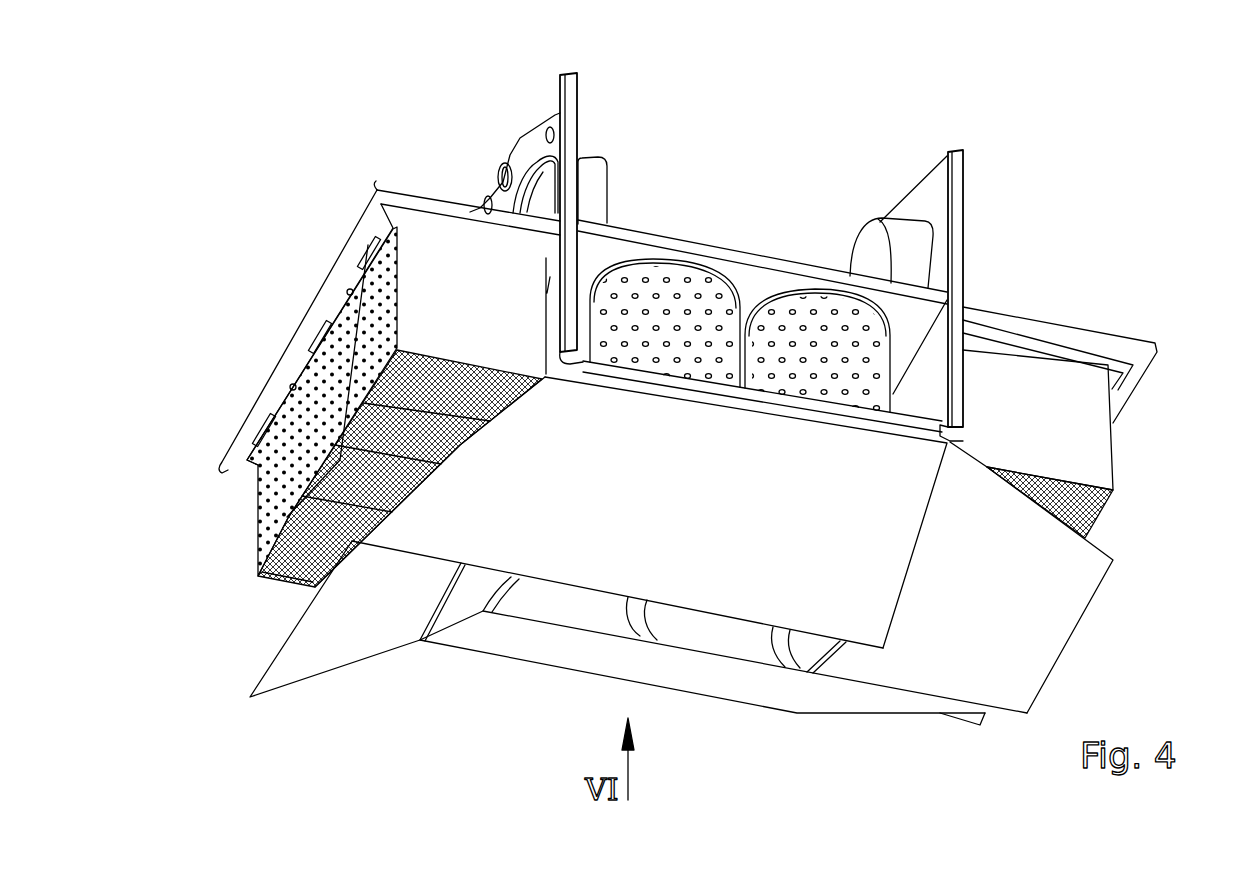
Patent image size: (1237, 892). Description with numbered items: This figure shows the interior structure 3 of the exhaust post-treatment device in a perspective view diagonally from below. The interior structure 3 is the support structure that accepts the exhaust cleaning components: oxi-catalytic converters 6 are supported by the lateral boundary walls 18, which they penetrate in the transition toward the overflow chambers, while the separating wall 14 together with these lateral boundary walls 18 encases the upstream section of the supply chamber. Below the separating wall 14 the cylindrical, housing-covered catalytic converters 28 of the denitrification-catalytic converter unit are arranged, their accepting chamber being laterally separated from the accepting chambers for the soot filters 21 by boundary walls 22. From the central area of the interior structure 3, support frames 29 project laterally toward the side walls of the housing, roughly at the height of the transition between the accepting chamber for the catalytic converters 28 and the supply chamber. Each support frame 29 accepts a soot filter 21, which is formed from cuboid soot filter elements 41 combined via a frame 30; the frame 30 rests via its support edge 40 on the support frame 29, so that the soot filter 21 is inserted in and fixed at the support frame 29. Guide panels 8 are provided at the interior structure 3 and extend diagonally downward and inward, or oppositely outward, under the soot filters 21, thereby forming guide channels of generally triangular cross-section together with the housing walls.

The interior structure 3 is at (938, 146).
The oxi-catalytic converter 6 is at (597, 185).
The guide panel 8 is at (850, 483).
The separating wall 14 is at (743, 253).
The lateral boundary wall 18 is at (933, 205).
The soot filter 21 is at (1122, 453).
The boundary wall 22 is at (937, 400).
The catalytic converter 28 is at (653, 273).
The support frame 29 is at (383, 207).
The frame 30 is at (394, 254).
The support edge 40 is at (343, 307).
The soot filter element 41 is at (260, 566).